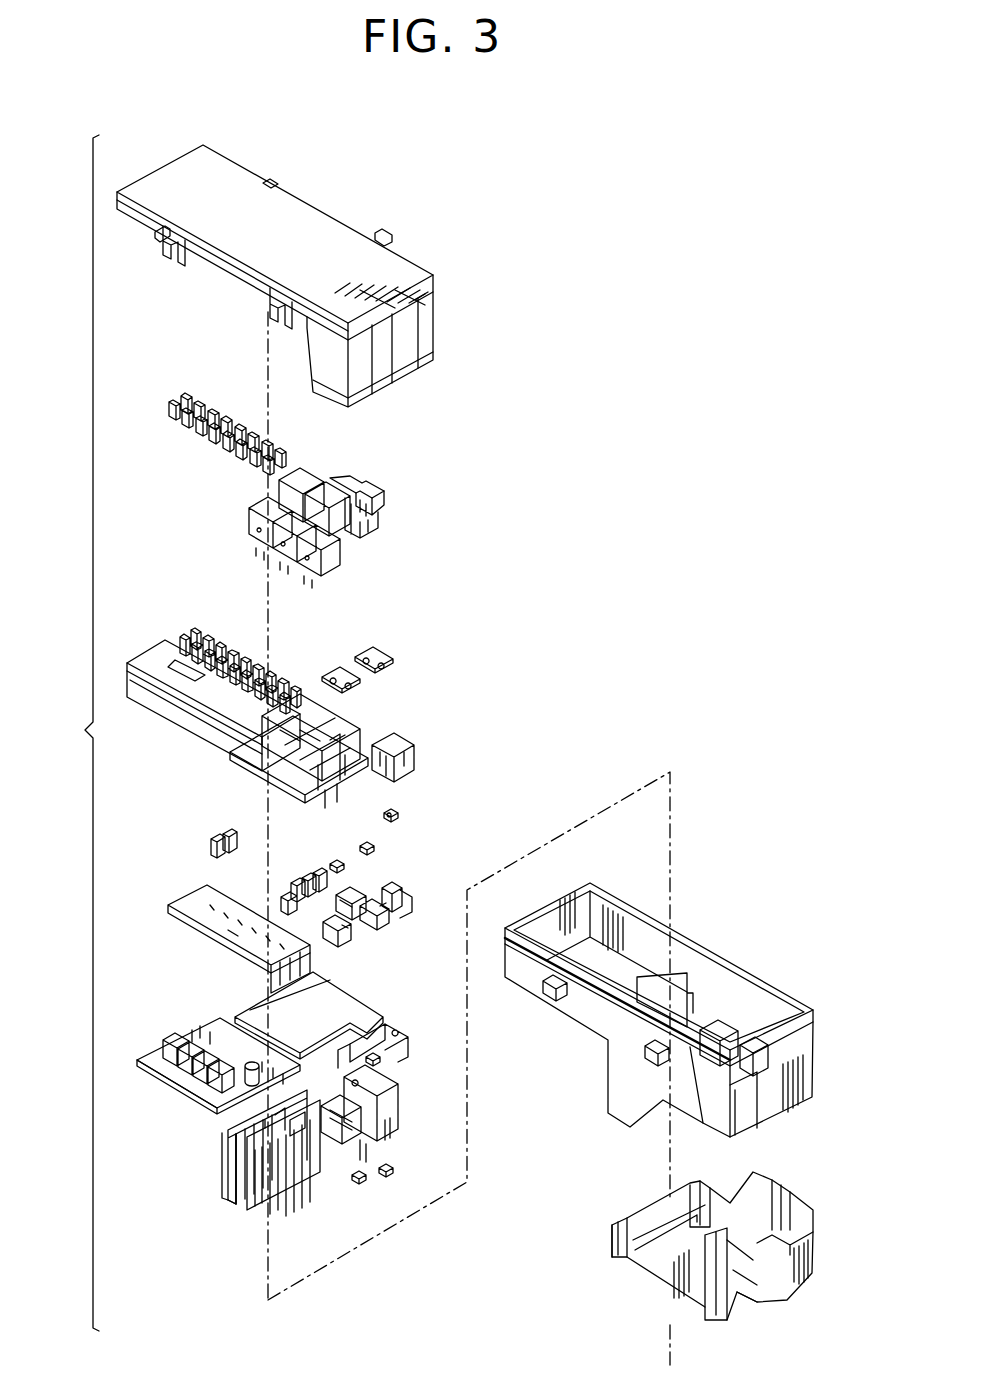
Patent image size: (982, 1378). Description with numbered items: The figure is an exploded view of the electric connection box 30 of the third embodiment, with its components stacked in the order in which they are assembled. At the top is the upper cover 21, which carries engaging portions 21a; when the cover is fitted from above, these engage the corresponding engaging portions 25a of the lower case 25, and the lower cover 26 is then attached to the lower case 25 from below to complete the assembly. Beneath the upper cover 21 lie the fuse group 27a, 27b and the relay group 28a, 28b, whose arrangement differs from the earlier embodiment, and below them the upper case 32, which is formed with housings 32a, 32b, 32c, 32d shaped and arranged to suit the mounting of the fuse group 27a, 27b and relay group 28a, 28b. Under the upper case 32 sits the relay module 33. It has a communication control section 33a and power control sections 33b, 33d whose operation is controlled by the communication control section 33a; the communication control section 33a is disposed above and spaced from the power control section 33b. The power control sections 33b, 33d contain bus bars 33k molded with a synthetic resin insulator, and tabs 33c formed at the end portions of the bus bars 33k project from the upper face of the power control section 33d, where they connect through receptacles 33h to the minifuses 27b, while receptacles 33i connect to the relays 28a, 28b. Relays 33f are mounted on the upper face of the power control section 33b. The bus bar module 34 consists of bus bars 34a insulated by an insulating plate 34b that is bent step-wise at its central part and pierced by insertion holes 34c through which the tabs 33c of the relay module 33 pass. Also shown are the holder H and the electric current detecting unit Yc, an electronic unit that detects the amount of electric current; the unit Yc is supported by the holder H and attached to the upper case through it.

The upper cover 21 is at (330, 210).
The engaging portions 21a is at (388, 238).
The lower case 25 is at (698, 933).
The engaging portions 25a is at (556, 997).
The lower cover 26 is at (668, 1260).
The fuse group 27a is at (355, 496).
The minifuses 27b is at (242, 428).
The relay group 28a is at (262, 512).
The relay group 28b is at (318, 492).
The electric connection box 30 is at (71, 733).
The upper case 32 is at (204, 667).
The housing 32a is at (243, 648).
The housing 32b is at (255, 760).
The housing 32c is at (358, 662).
The housing 32d is at (365, 740).
The relay module 33 is at (229, 1115).
The communication control section 33a is at (275, 1180).
The power control section 33b is at (228, 1192).
The tabs 33c is at (190, 1040).
The power control section 33d is at (180, 1082).
The relays 33f is at (300, 1132).
The receptacles 33h is at (214, 845).
The receptacles 33i is at (298, 880).
The bus bars 33k is at (228, 1120).
The bus bar module 34 is at (254, 954).
The bus bars 34a is at (236, 943).
The insulating plate 34b is at (330, 1002).
The insertion holes 34c is at (222, 895).
The holder H is at (388, 932).
The electric current detecting unit Yc is at (400, 1122).